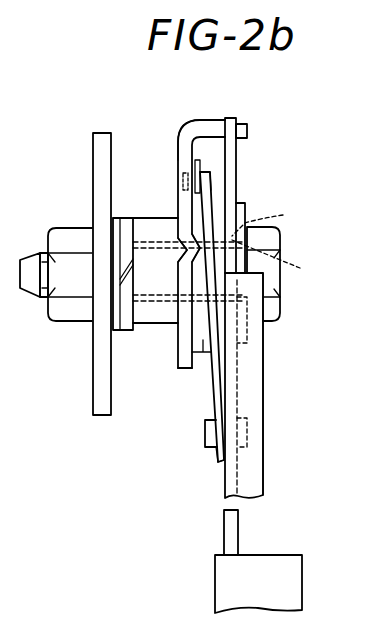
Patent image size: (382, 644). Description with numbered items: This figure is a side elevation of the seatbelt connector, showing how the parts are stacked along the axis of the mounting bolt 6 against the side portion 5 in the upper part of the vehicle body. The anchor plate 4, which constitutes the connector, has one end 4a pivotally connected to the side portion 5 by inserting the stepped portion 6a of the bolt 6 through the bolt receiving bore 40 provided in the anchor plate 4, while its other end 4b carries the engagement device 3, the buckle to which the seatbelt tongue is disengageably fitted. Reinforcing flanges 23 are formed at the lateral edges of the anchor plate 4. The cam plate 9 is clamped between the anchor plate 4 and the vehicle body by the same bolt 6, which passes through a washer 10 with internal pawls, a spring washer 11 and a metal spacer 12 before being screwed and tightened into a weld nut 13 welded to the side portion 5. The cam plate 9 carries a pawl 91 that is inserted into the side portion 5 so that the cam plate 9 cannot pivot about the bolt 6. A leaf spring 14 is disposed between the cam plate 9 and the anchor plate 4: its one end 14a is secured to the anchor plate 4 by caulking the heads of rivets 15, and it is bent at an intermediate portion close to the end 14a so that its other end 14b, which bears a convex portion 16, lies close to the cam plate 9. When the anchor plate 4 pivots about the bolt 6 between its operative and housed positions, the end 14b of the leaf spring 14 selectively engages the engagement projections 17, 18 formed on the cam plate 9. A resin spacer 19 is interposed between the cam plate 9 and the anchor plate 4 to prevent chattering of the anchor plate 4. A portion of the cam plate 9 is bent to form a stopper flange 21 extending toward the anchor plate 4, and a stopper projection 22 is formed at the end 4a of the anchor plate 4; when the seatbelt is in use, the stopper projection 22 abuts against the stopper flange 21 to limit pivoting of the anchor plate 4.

The engagement device 3 is at (296, 566).
The anchor plate 4 is at (228, 483).
The one end of the anchor plate 4a is at (244, 202).
The other end of the anchor plate 4b is at (238, 528).
The side portion 5 is at (96, 158).
The mounting bolt 6 is at (44, 290).
The stepped portion 6a is at (279, 261).
The cam plate 9 is at (183, 364).
The washer with internal pawls 10 is at (114, 222).
The spring washer 11 is at (127, 327).
The spacer 12 is at (158, 315).
The weld nut 13 is at (72, 305).
The leaf spring 14 is at (208, 212).
The one end of the leaf spring 14a is at (217, 455).
The other end of the leaf spring 14b is at (210, 180).
The rivets 15 is at (205, 432).
The convex portion 16 is at (183, 178).
The engagement projection 17 is at (182, 136).
The engagement projection 18 is at (188, 250).
The resin spacer 19 is at (203, 354).
The stopper flange 21 is at (215, 120).
The stopper projection 22 is at (235, 122).
The reinforcing flanges 23 is at (258, 358).
The bolt receiving bore 40 is at (274, 219).
The pawl 91 is at (30, 262).